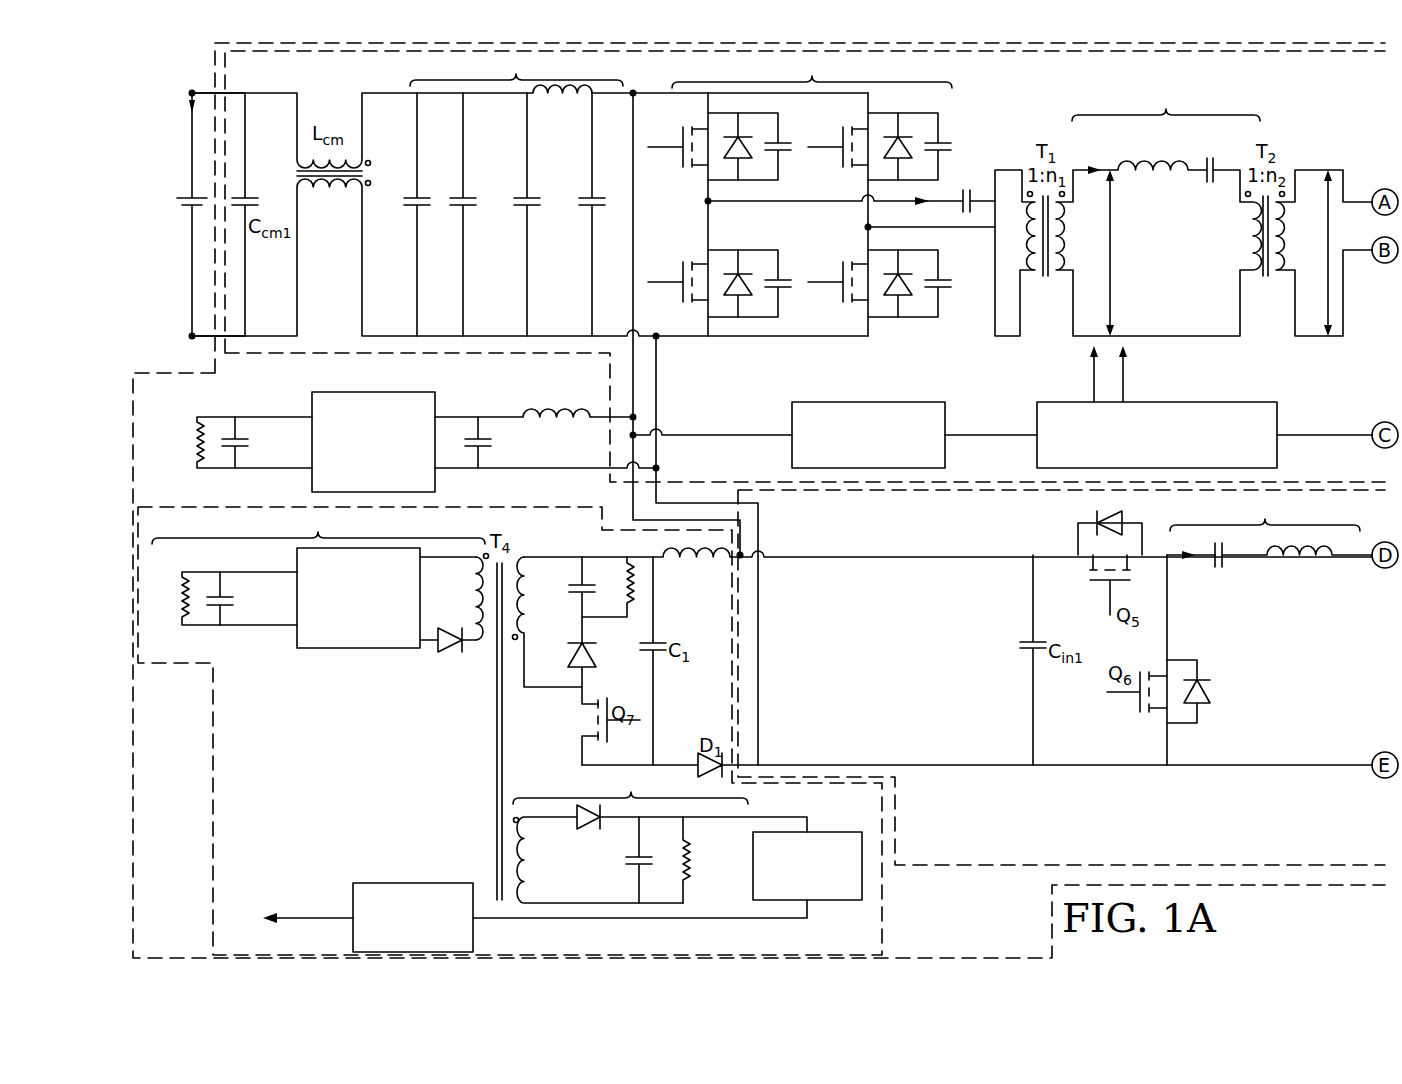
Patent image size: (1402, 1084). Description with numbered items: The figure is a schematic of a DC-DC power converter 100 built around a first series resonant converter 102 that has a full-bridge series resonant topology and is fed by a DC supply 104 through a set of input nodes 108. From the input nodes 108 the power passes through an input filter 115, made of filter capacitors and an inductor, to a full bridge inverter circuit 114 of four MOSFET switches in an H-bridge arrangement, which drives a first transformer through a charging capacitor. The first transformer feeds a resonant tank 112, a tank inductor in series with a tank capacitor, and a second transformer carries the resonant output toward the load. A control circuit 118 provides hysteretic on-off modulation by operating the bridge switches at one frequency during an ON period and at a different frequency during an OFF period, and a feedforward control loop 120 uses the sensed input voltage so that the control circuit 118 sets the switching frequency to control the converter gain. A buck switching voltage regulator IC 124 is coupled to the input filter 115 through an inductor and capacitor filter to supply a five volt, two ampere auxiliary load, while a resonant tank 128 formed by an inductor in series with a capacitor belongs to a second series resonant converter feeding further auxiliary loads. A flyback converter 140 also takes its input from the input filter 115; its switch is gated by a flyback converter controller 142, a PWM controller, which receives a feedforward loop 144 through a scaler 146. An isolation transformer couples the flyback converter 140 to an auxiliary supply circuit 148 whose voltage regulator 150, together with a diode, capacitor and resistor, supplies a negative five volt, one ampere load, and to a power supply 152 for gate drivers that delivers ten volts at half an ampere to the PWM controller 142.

The DC-DC power converter 100 is at (214, 63).
The first series resonant converter 102 is at (224, 280).
The DC supply 104 is at (187, 222).
The set of input nodes 108 is at (192, 93).
The resonant tank 112 is at (1198, 208).
The full bridge inverter circuit 114 is at (813, 194).
The input filter 115 is at (498, 192).
The control circuit 118 is at (1052, 401).
The feedforward control loop 120 is at (838, 401).
The buck switching voltage regulator IC 124 is at (350, 391).
The resonant tank 128 is at (1269, 541).
The flyback converter 140 is at (213, 868).
The flyback converter controller 142 is at (427, 882).
The feedforward loop 144 is at (809, 921).
The scaler 146 is at (862, 865).
The auxiliary supply circuit 148 is at (313, 566).
The voltage regulator (MC7905BD2TG) 150 is at (350, 649).
The power supply for gate drivers 152 is at (681, 833).